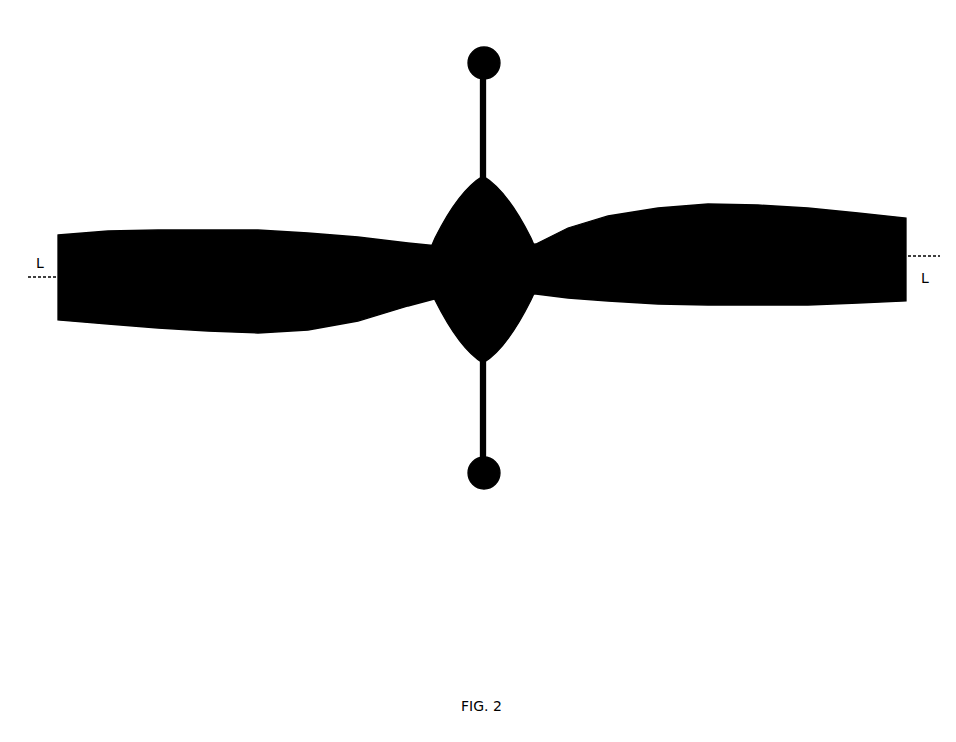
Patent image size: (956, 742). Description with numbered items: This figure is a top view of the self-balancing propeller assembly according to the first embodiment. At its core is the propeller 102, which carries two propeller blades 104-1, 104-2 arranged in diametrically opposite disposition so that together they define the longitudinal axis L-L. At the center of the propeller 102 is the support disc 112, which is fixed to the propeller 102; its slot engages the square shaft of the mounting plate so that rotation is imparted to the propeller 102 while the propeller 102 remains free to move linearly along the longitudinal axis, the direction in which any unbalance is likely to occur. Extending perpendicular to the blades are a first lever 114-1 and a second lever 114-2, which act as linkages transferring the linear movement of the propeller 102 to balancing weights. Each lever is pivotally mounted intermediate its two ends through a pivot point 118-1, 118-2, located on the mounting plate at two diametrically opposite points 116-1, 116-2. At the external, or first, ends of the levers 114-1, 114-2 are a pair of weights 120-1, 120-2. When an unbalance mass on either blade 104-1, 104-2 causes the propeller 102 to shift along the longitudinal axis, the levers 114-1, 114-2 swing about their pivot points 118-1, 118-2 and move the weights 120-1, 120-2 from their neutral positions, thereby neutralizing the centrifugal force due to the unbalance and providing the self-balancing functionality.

The propeller 102 is at (146, 334).
The first propeller blade 104-1 is at (232, 228).
The second propeller blade 104-2 is at (782, 205).
The support disc 112 is at (432, 290).
The first lever 114-1 is at (466, 406).
The second lever 114-2 is at (468, 118).
The first diametrically opposite point 116-1 is at (549, 397).
The first pivot point 118-1 is at (485, 357).
The second diametrically opposite point 116-2 is at (565, 158).
The second pivot point 118-2 is at (487, 163).
The first weight 120-1 is at (458, 465).
The second weight 120-2 is at (458, 60).